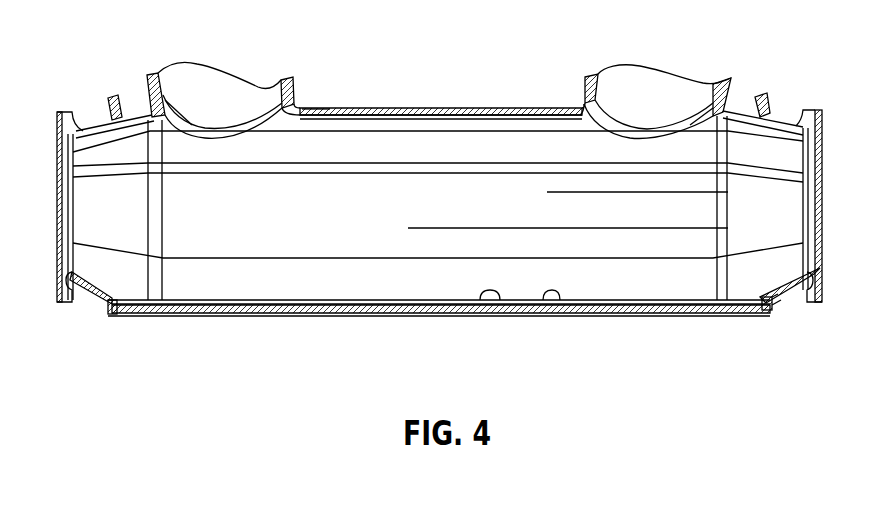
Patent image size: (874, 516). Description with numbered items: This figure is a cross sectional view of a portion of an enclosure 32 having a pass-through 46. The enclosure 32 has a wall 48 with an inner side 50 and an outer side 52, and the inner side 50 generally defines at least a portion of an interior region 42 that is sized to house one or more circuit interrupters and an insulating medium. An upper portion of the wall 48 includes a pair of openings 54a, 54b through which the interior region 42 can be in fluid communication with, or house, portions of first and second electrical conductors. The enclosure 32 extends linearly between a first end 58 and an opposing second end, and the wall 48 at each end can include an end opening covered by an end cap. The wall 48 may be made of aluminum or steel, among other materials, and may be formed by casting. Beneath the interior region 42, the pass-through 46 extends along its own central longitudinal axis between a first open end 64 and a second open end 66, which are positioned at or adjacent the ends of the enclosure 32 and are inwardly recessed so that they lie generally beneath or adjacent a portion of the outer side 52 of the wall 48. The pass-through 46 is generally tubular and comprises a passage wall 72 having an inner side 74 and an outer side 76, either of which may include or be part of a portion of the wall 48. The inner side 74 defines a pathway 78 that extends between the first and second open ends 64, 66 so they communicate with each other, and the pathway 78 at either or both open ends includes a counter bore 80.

The enclosure 32 is at (463, 108).
The interior region 42 is at (312, 245).
The pass-through 46 is at (623, 303).
The wall 48 is at (383, 108).
The inner side 50 is at (520, 108).
The outer side 52 is at (320, 108).
The opening 54a is at (640, 136).
The opening 54b is at (207, 130).
The first end 58 is at (780, 121).
The first open end 64 is at (776, 305).
The second open end 66 is at (82, 130).
The passage wall 72 is at (220, 318).
The inner side 74 is at (480, 299).
The outer side 76 is at (550, 299).
The pathway 78 is at (407, 308).
The counter bore 80 is at (108, 303).